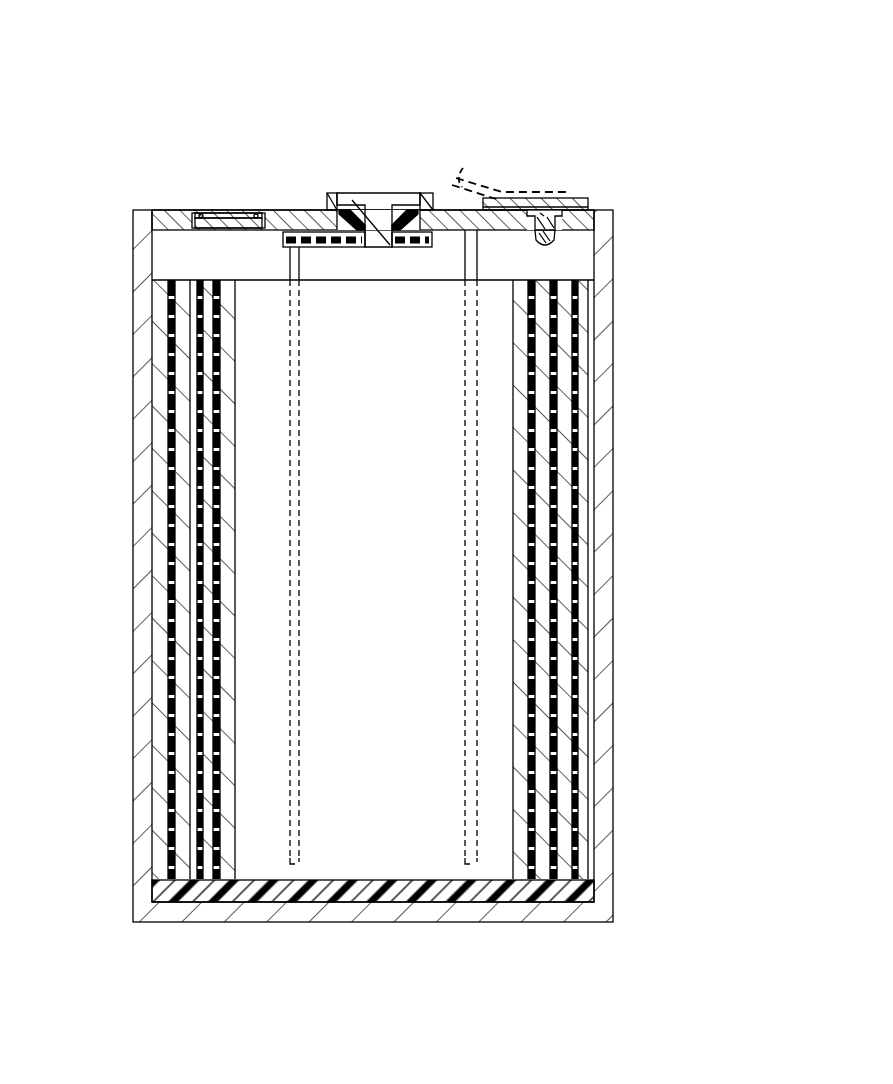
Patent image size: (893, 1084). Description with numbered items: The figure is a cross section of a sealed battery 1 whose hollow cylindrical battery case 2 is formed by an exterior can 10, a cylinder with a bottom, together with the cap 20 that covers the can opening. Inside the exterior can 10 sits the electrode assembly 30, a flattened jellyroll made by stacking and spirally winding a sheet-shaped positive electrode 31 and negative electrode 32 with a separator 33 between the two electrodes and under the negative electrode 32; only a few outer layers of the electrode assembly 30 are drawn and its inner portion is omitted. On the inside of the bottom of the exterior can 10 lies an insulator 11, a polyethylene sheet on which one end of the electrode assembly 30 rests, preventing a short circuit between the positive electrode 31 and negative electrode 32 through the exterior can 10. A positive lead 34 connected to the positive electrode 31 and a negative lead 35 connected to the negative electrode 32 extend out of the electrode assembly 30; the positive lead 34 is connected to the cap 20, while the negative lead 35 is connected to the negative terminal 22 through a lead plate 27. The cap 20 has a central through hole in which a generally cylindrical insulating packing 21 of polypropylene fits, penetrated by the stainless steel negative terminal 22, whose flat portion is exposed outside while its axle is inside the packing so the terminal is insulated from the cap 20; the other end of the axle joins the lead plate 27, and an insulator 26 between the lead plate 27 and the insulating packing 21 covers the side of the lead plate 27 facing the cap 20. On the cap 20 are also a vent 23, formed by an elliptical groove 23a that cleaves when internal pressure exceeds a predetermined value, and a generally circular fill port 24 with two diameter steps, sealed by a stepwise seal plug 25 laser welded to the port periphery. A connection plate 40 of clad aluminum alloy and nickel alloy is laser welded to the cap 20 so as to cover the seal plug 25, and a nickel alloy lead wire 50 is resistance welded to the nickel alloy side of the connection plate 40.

The sealed battery 1 is at (563, 110).
The battery case 2 is at (618, 750).
The exterior can 10 is at (606, 610).
The insulator 11 is at (533, 894).
The cap 20 is at (165, 210).
The insulating packing 21 is at (423, 195).
The negative terminal 22 is at (381, 193).
The vent 23 is at (225, 178).
The groove 23a is at (251, 212).
The fill port 24 is at (546, 238).
The seal plug 25 is at (540, 238).
The insulator 26 is at (425, 247).
The lead plate 27 is at (335, 247).
The electrode assembly 30 is at (174, 266).
The positive electrode 31 is at (607, 445).
The negative electrode 32 is at (170, 448).
The separator 33 is at (600, 378).
The positive lead 34 is at (478, 272).
The negative lead 35 is at (290, 260).
The connection plate 40 is at (590, 206).
The lead wire 50 is at (505, 190).